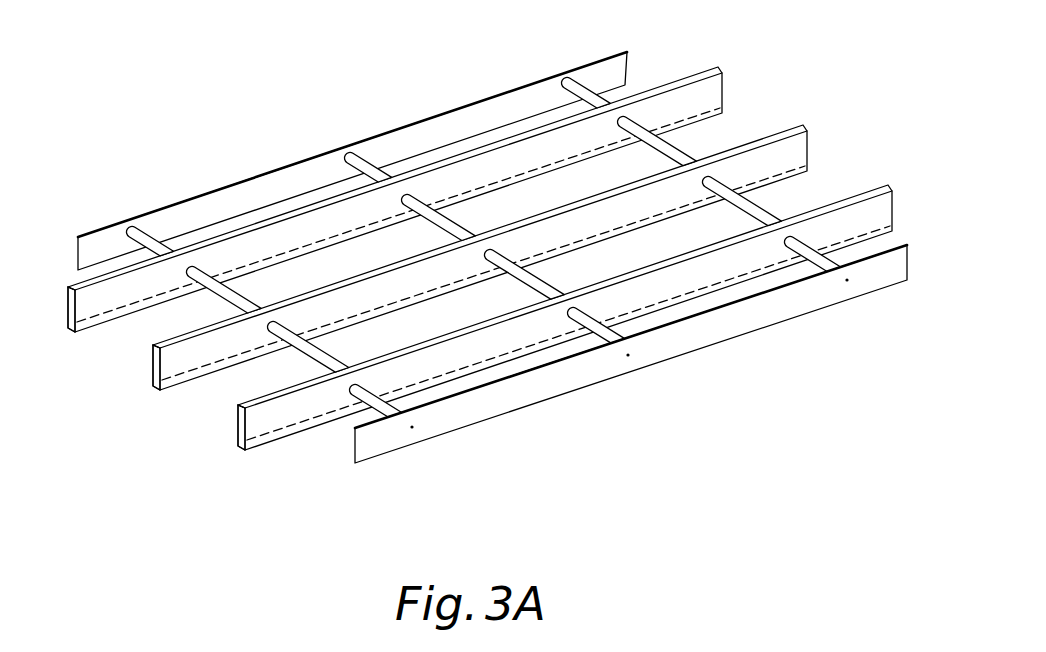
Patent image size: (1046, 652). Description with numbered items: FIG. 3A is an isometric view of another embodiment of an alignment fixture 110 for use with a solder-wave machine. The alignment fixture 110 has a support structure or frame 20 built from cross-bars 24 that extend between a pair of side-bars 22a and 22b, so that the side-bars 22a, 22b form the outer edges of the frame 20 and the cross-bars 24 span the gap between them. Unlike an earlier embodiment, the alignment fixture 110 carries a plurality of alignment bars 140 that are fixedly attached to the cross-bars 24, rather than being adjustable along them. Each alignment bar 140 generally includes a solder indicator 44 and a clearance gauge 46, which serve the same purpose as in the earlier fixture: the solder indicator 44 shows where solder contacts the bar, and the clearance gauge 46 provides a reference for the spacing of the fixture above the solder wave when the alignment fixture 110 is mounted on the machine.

The alignment fixture 110 is at (422, 78).
The support structure or frame 20 is at (120, 250).
The side-bar 22a is at (263, 187).
The side-bar 22b is at (477, 416).
The alignment bar 140 is at (718, 85).
The solder indicator 44 is at (92, 318).
The clearance gauge 46 is at (82, 333).
The cross-bar 24 is at (300, 358).